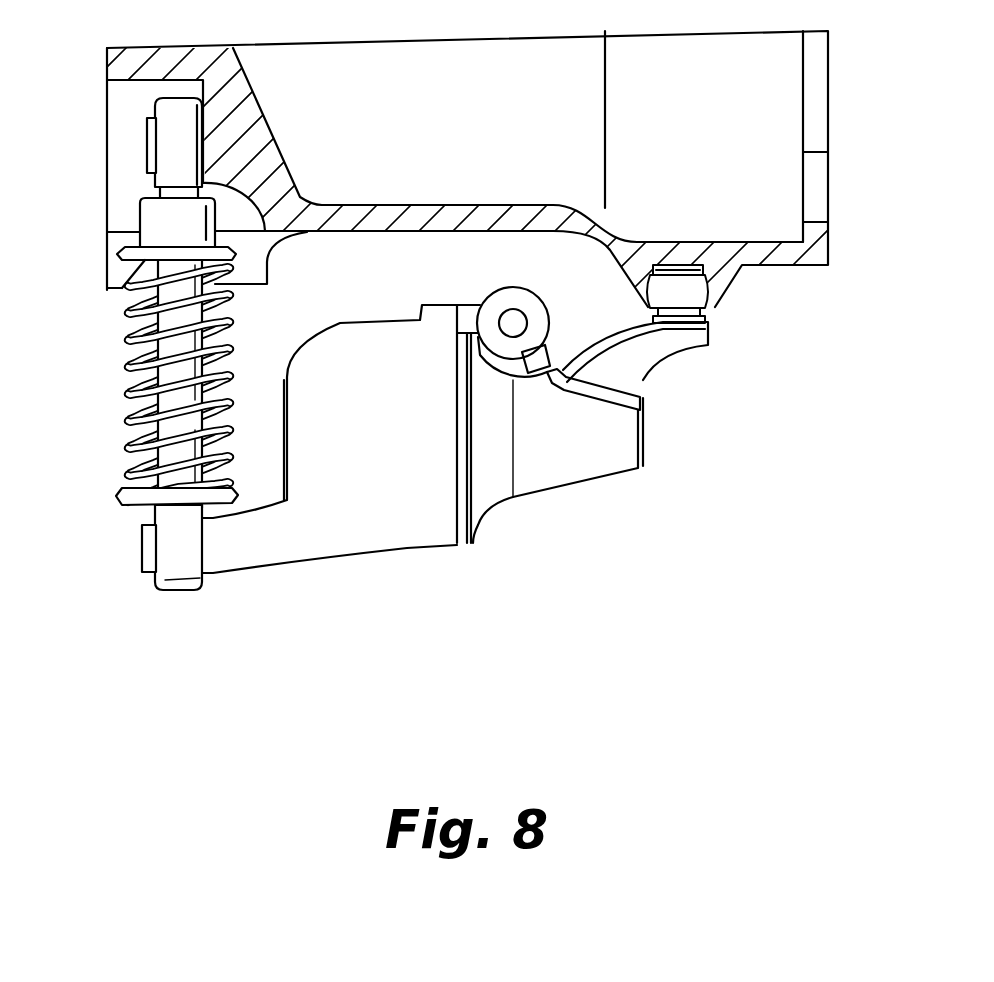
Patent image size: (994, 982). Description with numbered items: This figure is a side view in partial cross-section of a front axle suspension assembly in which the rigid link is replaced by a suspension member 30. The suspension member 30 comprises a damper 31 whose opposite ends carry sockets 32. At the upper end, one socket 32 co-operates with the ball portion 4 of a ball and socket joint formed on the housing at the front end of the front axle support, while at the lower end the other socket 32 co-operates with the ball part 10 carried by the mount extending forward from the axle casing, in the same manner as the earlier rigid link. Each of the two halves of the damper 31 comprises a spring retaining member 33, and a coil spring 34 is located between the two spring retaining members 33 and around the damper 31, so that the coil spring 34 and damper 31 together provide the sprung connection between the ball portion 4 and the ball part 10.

The ball portion 4 is at (152, 124).
The sockets 32 is at (148, 160).
The damper 31 is at (148, 227).
The spring retaining member 33 is at (112, 287).
The coil spring 34 is at (138, 368).
The suspension member 30 is at (104, 418).
The ball part 10 is at (143, 557).